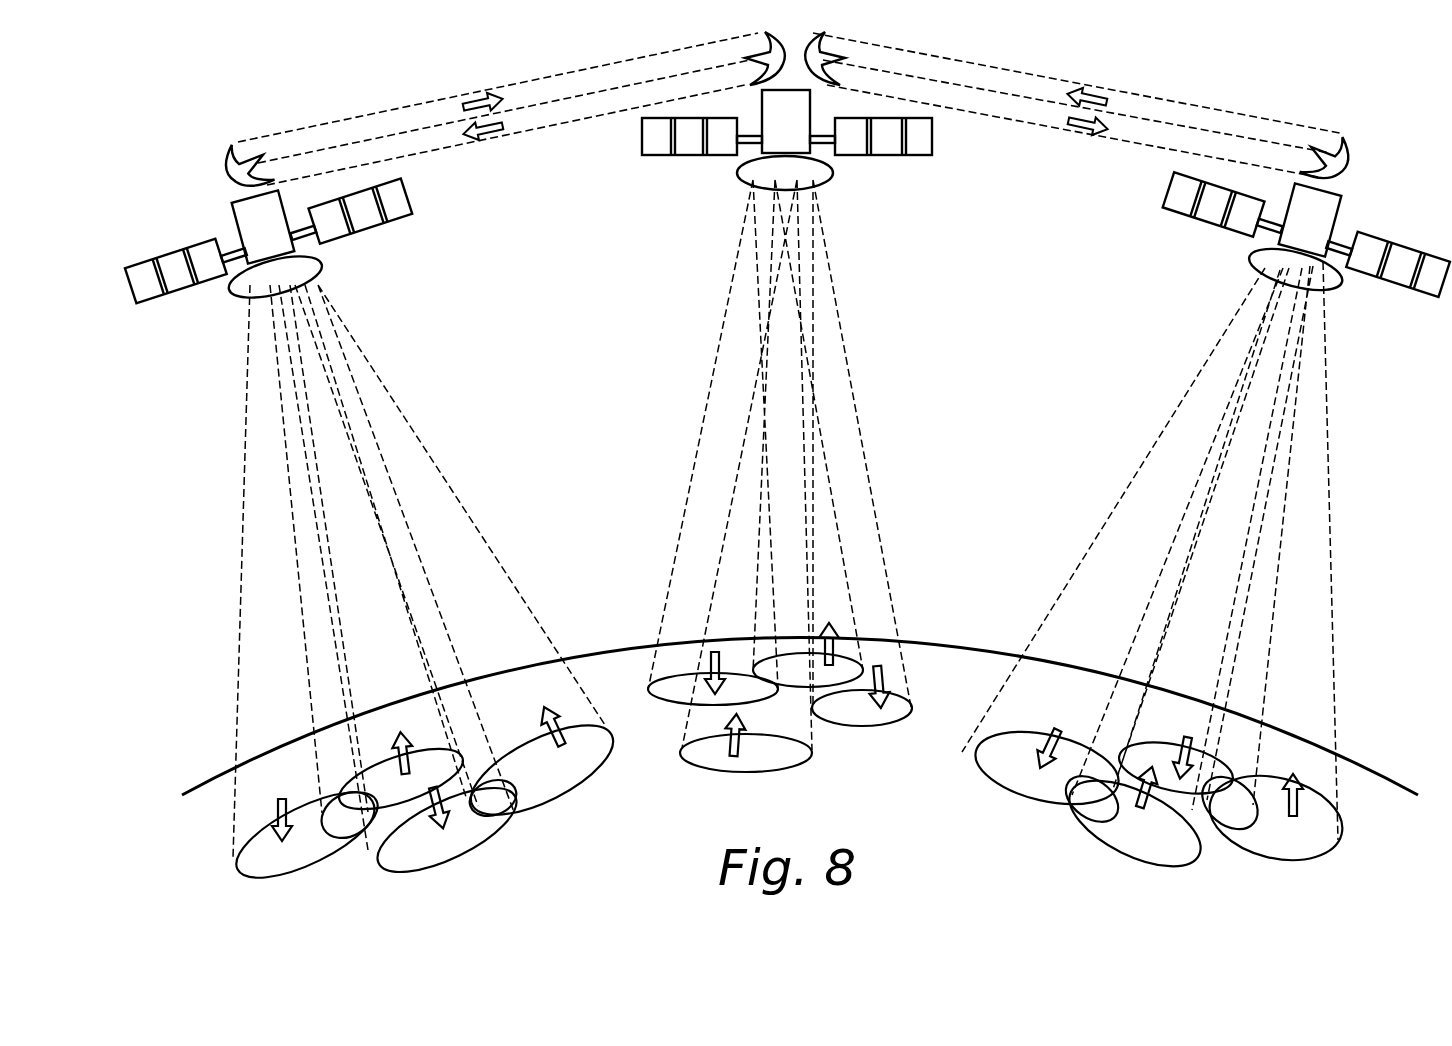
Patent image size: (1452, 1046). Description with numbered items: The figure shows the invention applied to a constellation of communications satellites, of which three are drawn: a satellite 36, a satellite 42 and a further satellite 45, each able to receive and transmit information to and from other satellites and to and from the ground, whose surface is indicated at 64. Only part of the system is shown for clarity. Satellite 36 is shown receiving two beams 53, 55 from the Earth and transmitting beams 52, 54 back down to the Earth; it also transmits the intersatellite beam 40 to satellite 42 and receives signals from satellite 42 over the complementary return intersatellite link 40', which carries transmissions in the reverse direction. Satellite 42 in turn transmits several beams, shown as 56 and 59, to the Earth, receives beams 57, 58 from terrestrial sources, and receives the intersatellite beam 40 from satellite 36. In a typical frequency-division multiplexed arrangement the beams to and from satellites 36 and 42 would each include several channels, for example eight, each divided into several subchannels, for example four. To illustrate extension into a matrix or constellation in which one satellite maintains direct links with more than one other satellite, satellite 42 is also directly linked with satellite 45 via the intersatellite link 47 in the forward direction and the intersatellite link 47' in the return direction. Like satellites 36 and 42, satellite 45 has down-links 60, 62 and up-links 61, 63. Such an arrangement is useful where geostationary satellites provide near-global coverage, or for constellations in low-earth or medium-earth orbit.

The satellite 36 is at (262, 214).
The satellite 42 is at (787, 111).
The satellite 45 is at (1302, 207).
The intersatellite beam 40 is at (498, 98).
The return intersatellite link 40' is at (506, 135).
The intersatellite link 47 is at (1076, 93).
The intersatellite link 47' is at (1072, 131).
The beam 52 is at (463, 850).
The beam 53 is at (550, 796).
The beam 54 is at (265, 880).
The beam 55 is at (352, 840).
The beam 56 is at (664, 704).
The beam 57 is at (750, 773).
The beam 58 is at (793, 688).
The beam 59 is at (861, 727).
The down-link 60 is at (1218, 828).
The up-link 61 is at (1294, 862).
The down-link 62 is at (1026, 793).
The up-link 63 is at (1128, 851).
The earth surface 64 is at (968, 649).